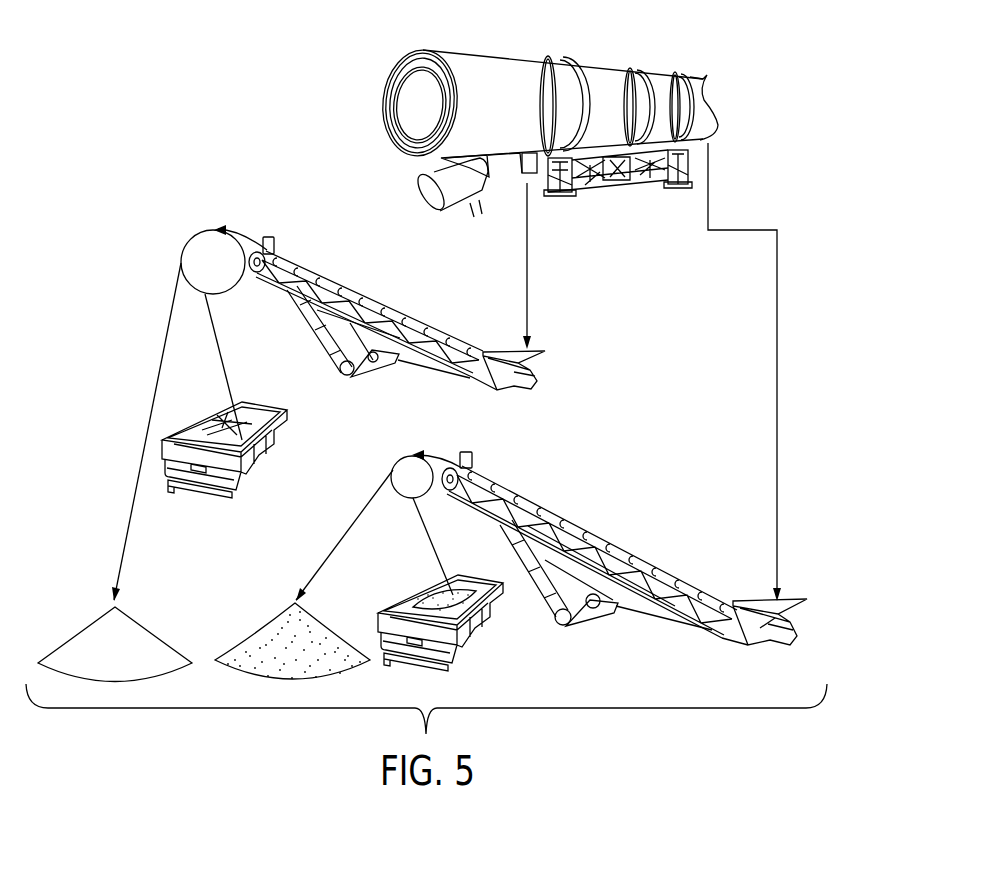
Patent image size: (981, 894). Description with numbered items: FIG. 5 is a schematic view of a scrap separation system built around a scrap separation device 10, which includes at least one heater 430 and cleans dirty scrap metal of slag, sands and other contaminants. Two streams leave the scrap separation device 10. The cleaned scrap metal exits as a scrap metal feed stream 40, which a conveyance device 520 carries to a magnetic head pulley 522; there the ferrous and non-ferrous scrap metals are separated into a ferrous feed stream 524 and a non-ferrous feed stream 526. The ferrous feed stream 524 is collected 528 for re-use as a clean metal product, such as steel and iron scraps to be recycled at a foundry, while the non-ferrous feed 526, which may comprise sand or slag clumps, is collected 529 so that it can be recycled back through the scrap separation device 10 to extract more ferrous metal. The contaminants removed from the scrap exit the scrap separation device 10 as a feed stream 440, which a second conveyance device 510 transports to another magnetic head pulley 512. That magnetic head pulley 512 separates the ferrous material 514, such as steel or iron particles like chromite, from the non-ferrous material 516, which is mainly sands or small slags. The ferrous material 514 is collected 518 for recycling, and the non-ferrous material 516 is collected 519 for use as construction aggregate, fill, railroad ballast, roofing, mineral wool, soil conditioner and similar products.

The scrap separation device 10 is at (600, 68).
The heater 430 is at (423, 196).
The scrap metal feed stream 40 is at (710, 183).
The feed stream 440 is at (529, 240).
The conveyance device 510 is at (503, 392).
The magnetic head pulley 512 is at (257, 272).
The ferrous material 514 is at (220, 345).
The non-ferrous material 516 is at (153, 386).
The collection of ferrous material 518 is at (283, 452).
The collection of non-ferrous material 519 is at (97, 623).
The conveyance device 520 is at (744, 640).
The magnetic head pulley 522 is at (462, 470).
The ferrous feed stream 524 is at (432, 545).
The non-ferrous feed stream 526 is at (353, 522).
The collection of ferrous feed stream 528 is at (487, 625).
The collection of non-ferrous feed 529 is at (258, 630).